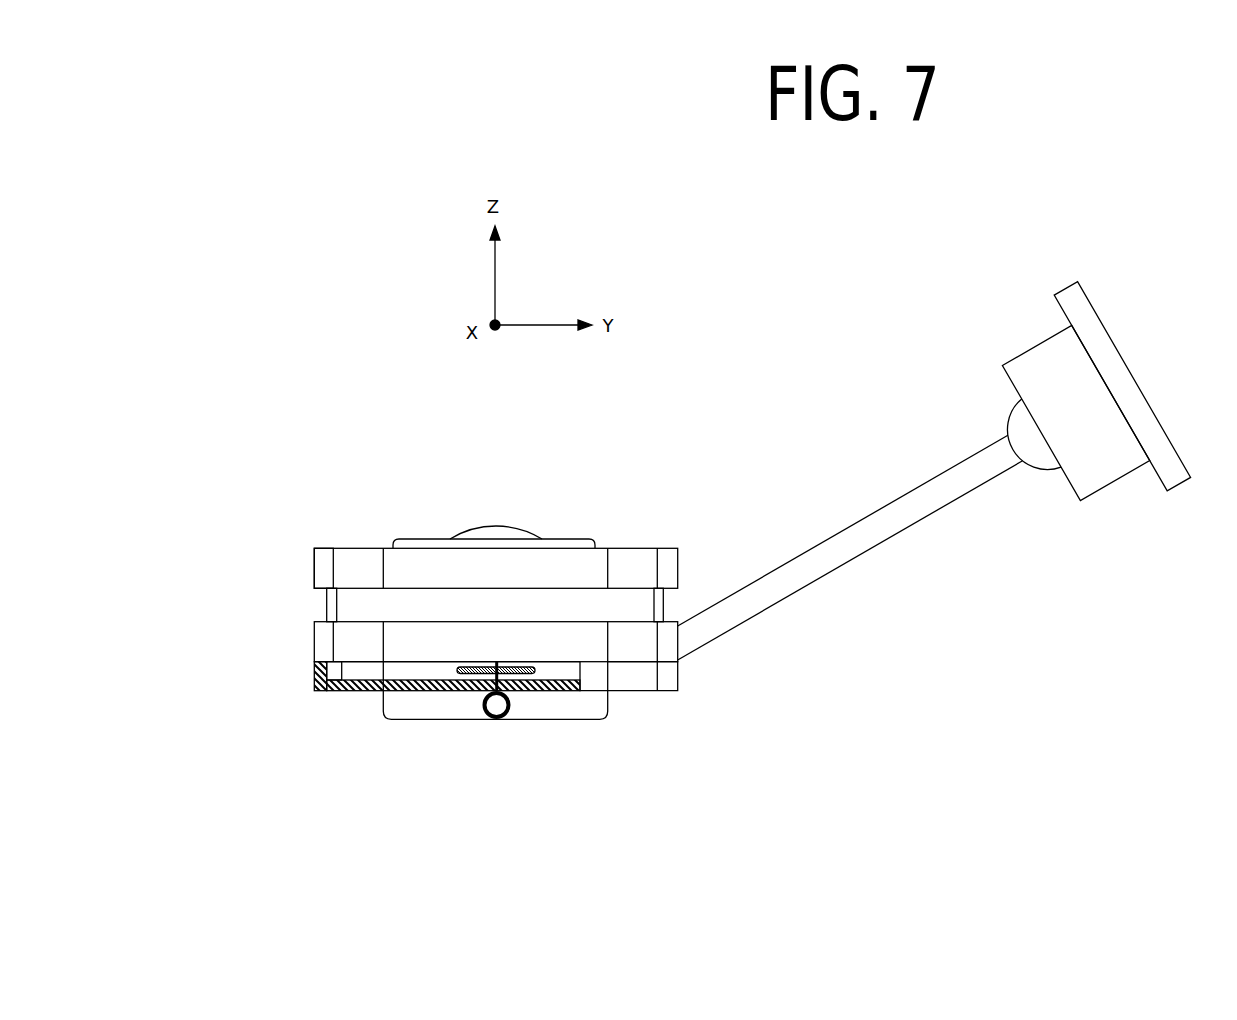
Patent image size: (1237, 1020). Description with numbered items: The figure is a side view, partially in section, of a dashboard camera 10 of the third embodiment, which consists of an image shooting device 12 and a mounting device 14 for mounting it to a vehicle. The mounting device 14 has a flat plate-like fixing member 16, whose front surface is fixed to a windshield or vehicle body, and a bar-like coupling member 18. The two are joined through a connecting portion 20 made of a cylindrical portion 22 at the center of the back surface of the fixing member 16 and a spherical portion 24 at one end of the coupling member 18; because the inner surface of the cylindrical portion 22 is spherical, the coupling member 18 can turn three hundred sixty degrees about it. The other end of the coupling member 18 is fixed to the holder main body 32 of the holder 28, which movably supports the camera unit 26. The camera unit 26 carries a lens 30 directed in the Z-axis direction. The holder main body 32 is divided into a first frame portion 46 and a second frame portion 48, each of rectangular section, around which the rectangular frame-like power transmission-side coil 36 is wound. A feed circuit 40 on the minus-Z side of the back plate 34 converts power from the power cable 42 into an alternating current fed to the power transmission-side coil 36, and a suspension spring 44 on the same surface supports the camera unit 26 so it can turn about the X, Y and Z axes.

The dashboard camera 10 is at (789, 428).
The image shooting device 12 is at (684, 565).
The mounting device 14 is at (928, 526).
The fixing member 16 is at (1117, 363).
The coupling member 18 is at (837, 545).
The connecting portion 20 is at (1002, 351).
The cylindrical portion 22 is at (1108, 477).
The spherical portion 24 is at (1040, 460).
The camera unit 26 is at (538, 522).
The holder 28 is at (633, 539).
The lens 30 is at (494, 526).
The holder main body 32 is at (304, 567).
The back plate 34 is at (345, 692).
The power transmission-side coil 36 is at (350, 606).
The feed circuit 40 is at (588, 707).
The power cable 42 is at (511, 703).
The suspension spring 44 is at (472, 676).
The first frame portion 46 is at (325, 560).
The second frame portion 48 is at (347, 645).